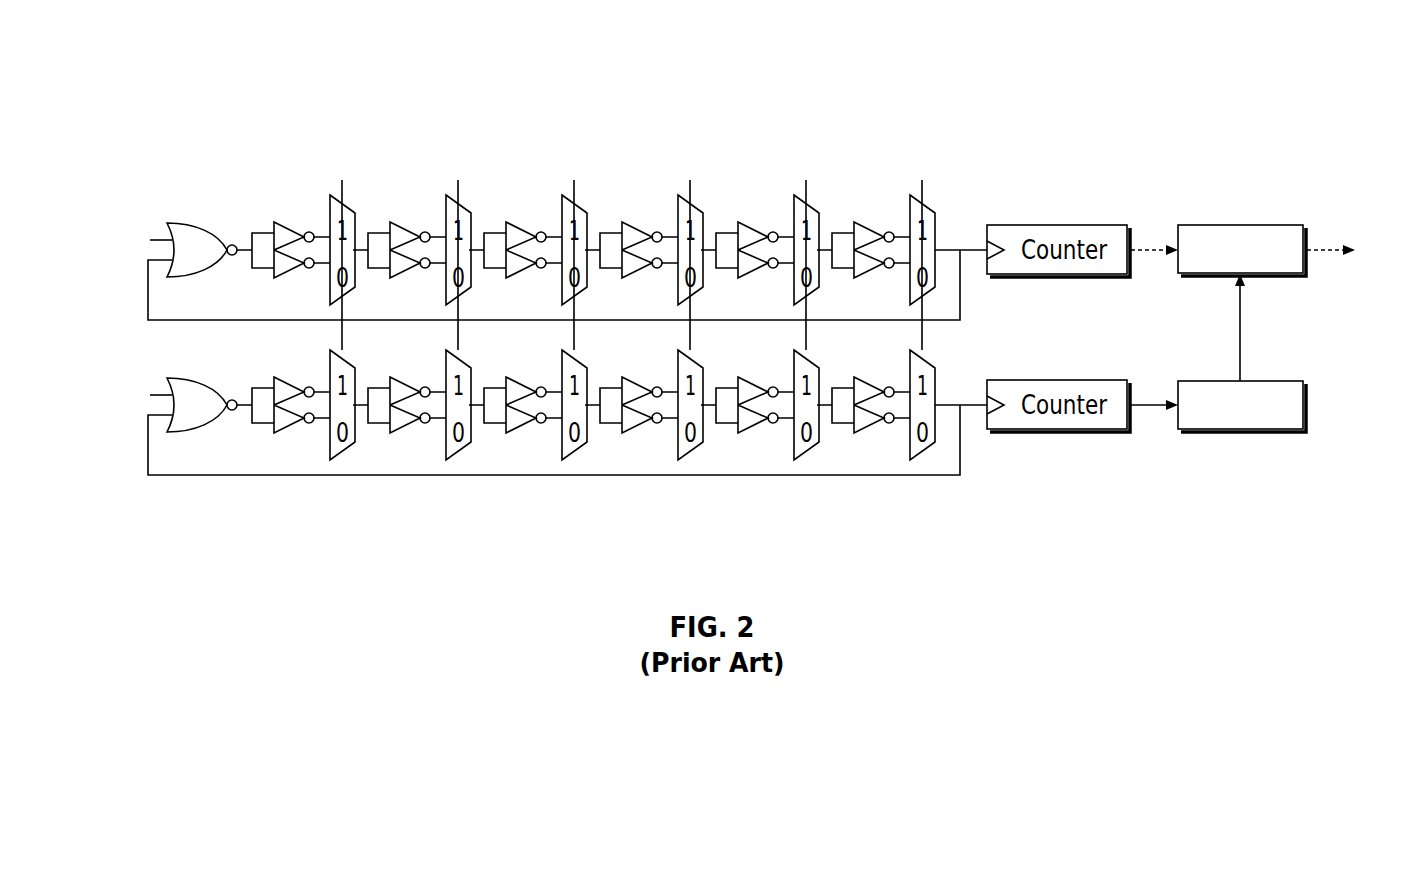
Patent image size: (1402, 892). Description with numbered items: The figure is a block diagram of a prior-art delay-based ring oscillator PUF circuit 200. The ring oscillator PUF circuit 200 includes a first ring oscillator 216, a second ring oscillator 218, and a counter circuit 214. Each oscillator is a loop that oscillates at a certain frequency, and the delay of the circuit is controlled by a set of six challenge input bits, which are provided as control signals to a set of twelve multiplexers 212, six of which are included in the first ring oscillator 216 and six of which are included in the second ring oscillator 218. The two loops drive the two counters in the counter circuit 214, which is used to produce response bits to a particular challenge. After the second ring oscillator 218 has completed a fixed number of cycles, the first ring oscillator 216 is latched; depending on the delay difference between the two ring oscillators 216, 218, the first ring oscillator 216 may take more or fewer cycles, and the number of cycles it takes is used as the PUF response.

The ring oscillator PUF circuit 200 is at (224, 112).
The multiplexers 212 is at (182, 498).
The counter circuit 214 is at (995, 498).
The first ring oscillator 216 is at (132, 200).
The second ring oscillator 218 is at (132, 355).